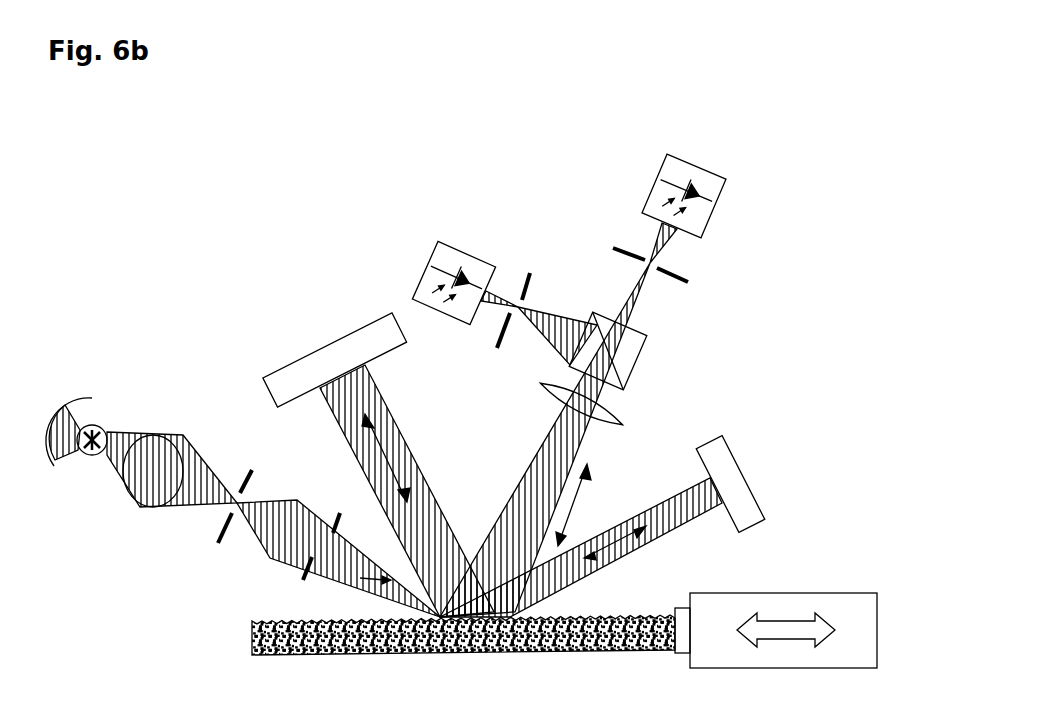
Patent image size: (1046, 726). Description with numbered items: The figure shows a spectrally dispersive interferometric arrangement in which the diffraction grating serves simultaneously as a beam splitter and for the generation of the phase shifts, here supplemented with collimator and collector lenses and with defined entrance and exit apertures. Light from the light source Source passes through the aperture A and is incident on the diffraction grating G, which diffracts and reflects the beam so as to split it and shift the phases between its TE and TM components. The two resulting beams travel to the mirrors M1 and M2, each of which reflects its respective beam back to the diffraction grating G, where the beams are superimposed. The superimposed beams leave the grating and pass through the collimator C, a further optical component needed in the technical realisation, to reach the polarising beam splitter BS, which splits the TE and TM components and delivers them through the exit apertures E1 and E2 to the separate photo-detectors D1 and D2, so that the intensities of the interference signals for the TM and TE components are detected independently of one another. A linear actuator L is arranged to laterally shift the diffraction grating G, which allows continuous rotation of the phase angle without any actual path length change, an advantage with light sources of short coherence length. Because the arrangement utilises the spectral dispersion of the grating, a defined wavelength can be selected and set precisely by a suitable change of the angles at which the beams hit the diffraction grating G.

The light source Source is at (307, 480).
The diaphragm A is at (321, 555).
The first mirror M1 is at (335, 360).
The second mirror M2 is at (734, 484).
The collimator C is at (567, 404).
The polarising beam splitter BS is at (630, 351).
The exit aperture E1 is at (666, 271).
The exit aperture E2 is at (515, 301).
The photo-detector D1 is at (665, 178).
The photo-detector D2 is at (437, 268).
The diffraction grating G is at (463, 650).
The linear actuator L is at (776, 643).